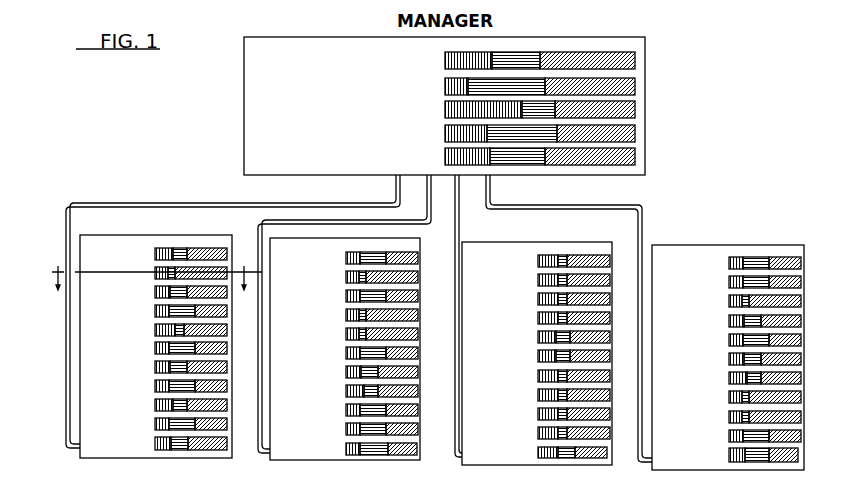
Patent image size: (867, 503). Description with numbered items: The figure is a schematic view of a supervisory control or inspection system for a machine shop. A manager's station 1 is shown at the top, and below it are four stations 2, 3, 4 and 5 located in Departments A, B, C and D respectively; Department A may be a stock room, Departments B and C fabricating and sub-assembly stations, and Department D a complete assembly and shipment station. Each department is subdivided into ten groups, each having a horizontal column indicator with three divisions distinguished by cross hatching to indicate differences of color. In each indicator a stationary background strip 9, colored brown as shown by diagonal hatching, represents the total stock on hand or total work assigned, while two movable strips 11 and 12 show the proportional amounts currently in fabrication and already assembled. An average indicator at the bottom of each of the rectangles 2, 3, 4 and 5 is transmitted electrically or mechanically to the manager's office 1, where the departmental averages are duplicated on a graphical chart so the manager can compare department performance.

The manager's station 1 is at (645, 50).
The Department A station 2 is at (108, 365).
The Department B station 3 is at (303, 351).
The Department C station 4 is at (490, 345).
The Department D station 5 is at (682, 348).
The background strip 9 is at (227, 262).
The movable strip 11 is at (180, 450).
The movable strip 12 is at (158, 450).